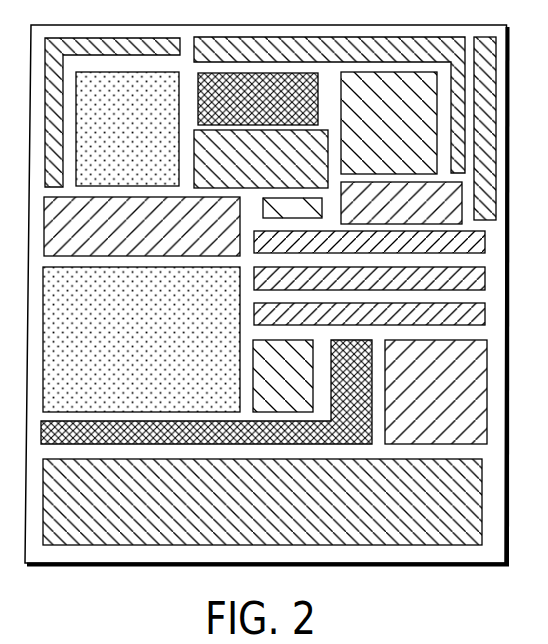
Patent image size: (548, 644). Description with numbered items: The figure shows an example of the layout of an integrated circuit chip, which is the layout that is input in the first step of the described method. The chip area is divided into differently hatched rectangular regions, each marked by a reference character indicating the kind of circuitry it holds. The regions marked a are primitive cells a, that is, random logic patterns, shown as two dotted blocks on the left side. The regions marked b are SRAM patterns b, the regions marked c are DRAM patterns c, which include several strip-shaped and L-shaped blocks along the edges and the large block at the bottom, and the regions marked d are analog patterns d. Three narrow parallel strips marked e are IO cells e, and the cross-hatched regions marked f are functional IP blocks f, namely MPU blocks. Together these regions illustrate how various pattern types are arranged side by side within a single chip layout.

The primitive cell a is at (141, 242).
The SRAM pattern b is at (265, 313).
The DRAM pattern c is at (269, 291).
The analog pattern d is at (345, 242).
The IO cell e is at (369, 278).
The functional IP block f is at (206, 258).